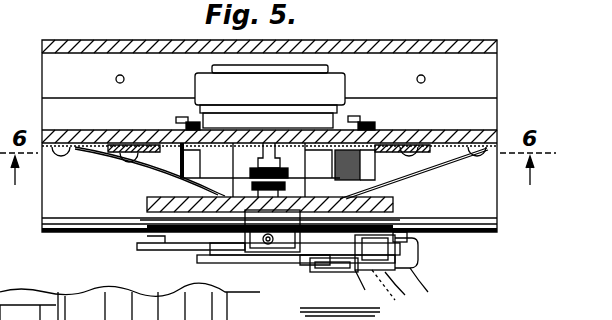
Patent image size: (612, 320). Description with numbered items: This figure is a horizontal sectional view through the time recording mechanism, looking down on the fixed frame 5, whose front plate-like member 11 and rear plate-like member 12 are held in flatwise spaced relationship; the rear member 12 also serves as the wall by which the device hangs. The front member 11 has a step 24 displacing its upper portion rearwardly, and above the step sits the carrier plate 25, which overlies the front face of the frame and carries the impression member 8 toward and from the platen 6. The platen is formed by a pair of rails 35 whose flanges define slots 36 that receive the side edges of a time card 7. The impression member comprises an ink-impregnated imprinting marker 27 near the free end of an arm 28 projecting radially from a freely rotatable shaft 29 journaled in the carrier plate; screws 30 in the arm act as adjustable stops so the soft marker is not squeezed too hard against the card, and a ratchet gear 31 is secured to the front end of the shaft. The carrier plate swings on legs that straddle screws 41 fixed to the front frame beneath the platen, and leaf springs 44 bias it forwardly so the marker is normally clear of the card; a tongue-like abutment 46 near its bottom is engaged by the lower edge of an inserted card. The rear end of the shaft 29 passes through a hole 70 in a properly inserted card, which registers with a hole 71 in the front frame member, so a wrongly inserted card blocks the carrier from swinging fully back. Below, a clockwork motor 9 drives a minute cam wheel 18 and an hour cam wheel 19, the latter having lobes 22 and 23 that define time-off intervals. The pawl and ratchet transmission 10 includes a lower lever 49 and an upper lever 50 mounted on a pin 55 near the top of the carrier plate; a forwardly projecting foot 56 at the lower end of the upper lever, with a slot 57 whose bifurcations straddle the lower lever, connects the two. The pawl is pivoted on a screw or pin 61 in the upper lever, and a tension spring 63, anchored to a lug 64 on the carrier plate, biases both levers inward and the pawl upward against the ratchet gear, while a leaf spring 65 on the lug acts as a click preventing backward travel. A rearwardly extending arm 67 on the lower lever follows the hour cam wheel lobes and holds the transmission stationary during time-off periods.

The fixed frame 5 is at (446, 32).
The platen 6 is at (404, 168).
The time card 7 is at (210, 160).
The impression member 8 is at (372, 160).
The clockwork motor 9 is at (348, 84).
The pawl and ratchet transmission 10 is at (309, 274).
The front plate-like member 11 is at (472, 130).
The rear plate-like member 12 is at (478, 56).
The minute cam wheel 18 is at (220, 272).
The hour cam wheel 19 is at (150, 250).
The lobe 22 is at (152, 240).
The lobe 23 is at (408, 236).
The step 24 is at (500, 190).
The carrier plate 25 is at (395, 204).
The imprinting marker 27 is at (345, 156).
The arm 28 is at (178, 166).
The shaft 29 is at (270, 150).
The screws 30 is at (364, 148).
The ratchet gear 31 is at (238, 262).
The rails 35 is at (118, 162).
The slots 36 is at (148, 138).
The stud or screw 41 is at (178, 188).
The leaf springs 44 is at (113, 170).
The tongue-like abutment 46 is at (238, 158).
The lower lever 49 is at (409, 290).
The upper lever 50 is at (375, 252).
The pin 55 is at (418, 252).
The foot 56 is at (372, 294).
The slot 57 is at (340, 270).
The screw or pin 61 is at (395, 294).
The tension spring 63 is at (205, 262).
The lug 64 is at (182, 248).
The leaf spring 65 is at (147, 218).
The arm 67 is at (433, 285).
The hole 70 is at (282, 126).
The hole 71 is at (258, 150).